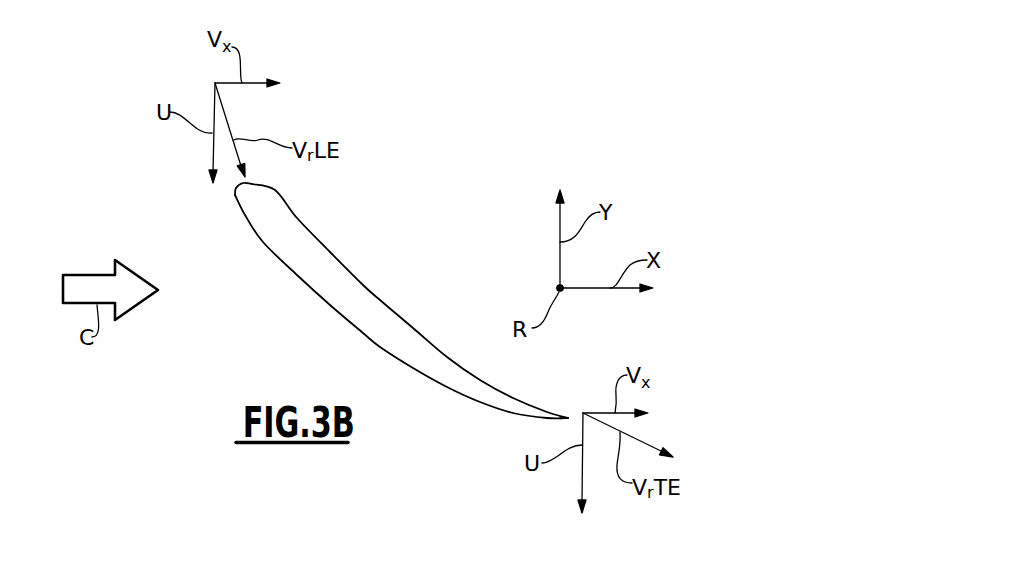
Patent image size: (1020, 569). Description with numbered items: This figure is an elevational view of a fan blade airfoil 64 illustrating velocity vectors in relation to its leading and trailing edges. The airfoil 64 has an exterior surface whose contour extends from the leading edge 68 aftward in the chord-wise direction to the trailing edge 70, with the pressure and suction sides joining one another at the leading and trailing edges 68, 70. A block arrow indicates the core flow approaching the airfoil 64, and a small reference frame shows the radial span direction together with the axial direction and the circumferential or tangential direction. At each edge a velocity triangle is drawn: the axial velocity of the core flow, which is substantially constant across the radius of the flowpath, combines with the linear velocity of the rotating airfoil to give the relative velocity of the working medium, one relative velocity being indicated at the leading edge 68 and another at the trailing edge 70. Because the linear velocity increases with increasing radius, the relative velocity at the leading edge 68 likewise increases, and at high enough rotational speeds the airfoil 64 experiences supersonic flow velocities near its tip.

The airfoil 64 is at (407, 289).
The leading edge 68 is at (238, 189).
The trailing edge 70 is at (560, 420).